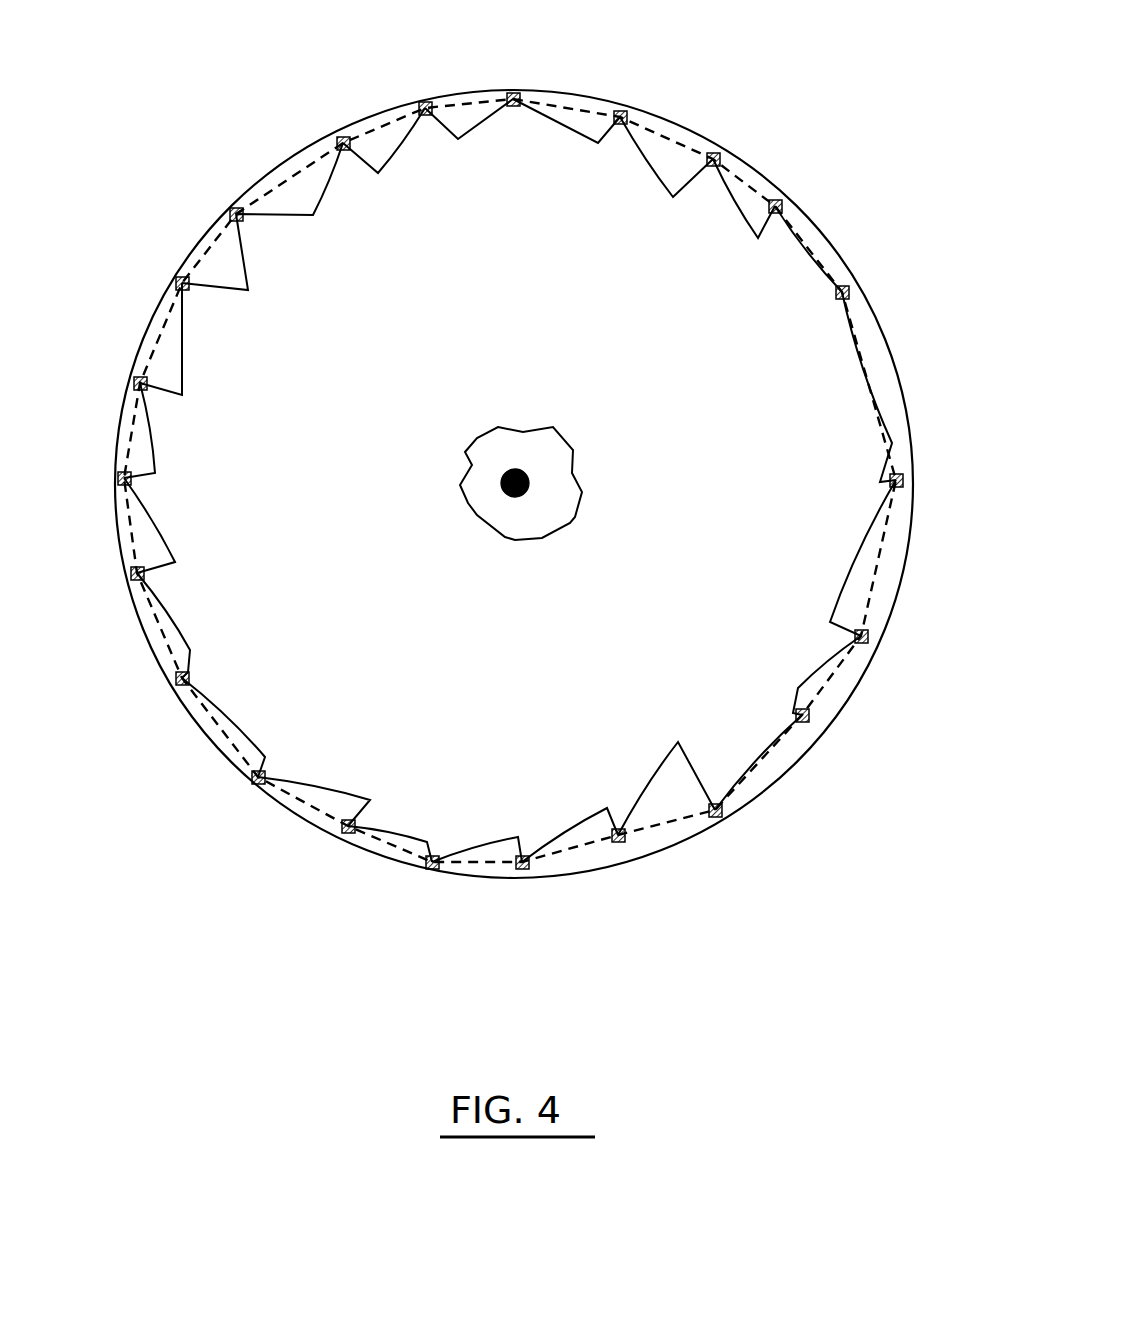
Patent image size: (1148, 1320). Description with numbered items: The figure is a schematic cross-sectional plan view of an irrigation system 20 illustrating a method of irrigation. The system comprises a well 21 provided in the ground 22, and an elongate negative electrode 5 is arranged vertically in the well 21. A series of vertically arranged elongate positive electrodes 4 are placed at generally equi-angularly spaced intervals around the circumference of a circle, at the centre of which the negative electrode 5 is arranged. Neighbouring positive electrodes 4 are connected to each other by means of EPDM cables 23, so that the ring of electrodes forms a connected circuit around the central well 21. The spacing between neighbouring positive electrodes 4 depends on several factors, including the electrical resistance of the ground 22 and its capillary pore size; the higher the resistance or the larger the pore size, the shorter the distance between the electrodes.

The positive electrode 4 is at (810, 718).
The negative electrode 5 is at (510, 497).
The irrigation system 20 is at (793, 789).
The well 21 is at (522, 450).
The ground 22 is at (210, 237).
The EPDM cable 23 is at (660, 135).